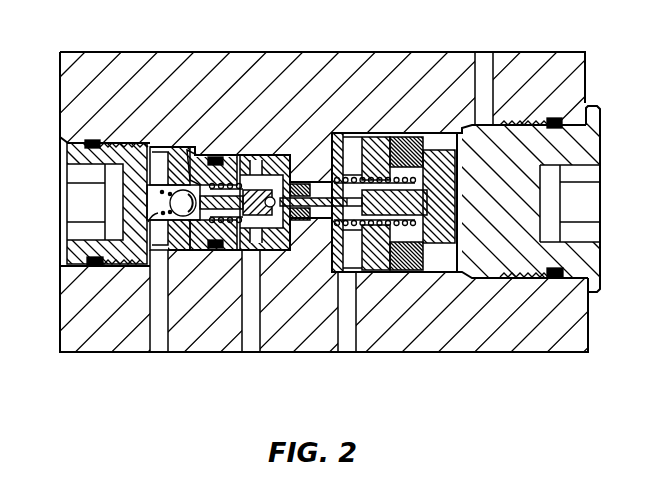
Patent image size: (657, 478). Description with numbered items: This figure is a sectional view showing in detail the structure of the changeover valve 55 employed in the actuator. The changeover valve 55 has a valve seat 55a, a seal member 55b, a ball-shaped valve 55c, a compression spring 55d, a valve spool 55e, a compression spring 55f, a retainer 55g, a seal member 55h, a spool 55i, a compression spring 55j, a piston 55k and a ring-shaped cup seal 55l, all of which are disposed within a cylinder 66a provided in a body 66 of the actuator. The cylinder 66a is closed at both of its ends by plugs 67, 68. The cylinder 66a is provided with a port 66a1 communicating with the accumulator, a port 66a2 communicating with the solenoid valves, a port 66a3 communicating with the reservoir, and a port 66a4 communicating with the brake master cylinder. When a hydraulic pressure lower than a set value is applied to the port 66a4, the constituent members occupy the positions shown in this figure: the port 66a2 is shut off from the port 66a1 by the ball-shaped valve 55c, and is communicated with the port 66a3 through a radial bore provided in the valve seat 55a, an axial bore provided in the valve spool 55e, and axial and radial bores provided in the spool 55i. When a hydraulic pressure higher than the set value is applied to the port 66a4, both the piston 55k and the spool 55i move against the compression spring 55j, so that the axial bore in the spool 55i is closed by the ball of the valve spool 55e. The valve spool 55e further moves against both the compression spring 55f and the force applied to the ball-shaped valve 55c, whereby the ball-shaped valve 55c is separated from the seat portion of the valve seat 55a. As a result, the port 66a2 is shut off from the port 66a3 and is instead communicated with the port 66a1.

The changeover valve 55 is at (228, 256).
The valve seat 55a is at (180, 152).
The seal member 55b is at (214, 155).
The ball-shaped valve 55c is at (160, 190).
The compression spring 55d is at (148, 212).
The valve spool 55e is at (297, 228).
The compression spring 55f is at (243, 156).
The retainer 55g is at (297, 260).
The seal member 55h is at (300, 183).
The spool 55i is at (376, 272).
The compression spring 55j is at (443, 243).
The piston 55k is at (440, 148).
The ring-shaped cup seal 55l is at (407, 133).
The body 66 is at (155, 58).
The cylinder 66a is at (342, 132).
The port 66a1 is at (159, 344).
The port 66a2 is at (250, 344).
The port 66a3 is at (350, 344).
The port 66a4 is at (485, 57).
The plug 67 is at (67, 153).
The plug 68 is at (600, 116).